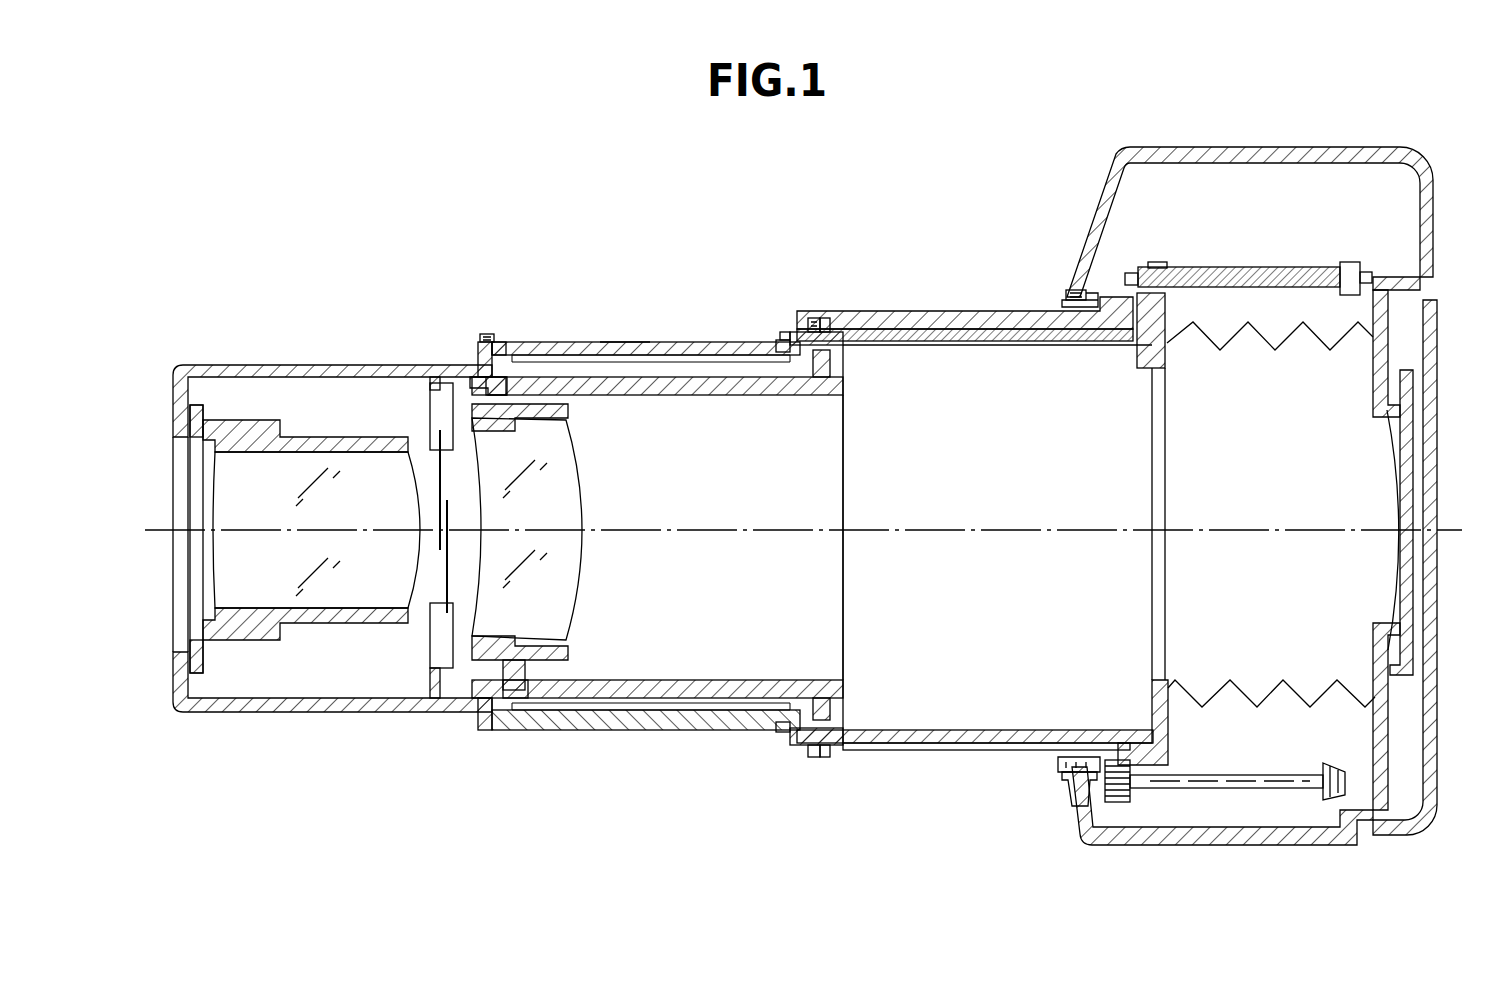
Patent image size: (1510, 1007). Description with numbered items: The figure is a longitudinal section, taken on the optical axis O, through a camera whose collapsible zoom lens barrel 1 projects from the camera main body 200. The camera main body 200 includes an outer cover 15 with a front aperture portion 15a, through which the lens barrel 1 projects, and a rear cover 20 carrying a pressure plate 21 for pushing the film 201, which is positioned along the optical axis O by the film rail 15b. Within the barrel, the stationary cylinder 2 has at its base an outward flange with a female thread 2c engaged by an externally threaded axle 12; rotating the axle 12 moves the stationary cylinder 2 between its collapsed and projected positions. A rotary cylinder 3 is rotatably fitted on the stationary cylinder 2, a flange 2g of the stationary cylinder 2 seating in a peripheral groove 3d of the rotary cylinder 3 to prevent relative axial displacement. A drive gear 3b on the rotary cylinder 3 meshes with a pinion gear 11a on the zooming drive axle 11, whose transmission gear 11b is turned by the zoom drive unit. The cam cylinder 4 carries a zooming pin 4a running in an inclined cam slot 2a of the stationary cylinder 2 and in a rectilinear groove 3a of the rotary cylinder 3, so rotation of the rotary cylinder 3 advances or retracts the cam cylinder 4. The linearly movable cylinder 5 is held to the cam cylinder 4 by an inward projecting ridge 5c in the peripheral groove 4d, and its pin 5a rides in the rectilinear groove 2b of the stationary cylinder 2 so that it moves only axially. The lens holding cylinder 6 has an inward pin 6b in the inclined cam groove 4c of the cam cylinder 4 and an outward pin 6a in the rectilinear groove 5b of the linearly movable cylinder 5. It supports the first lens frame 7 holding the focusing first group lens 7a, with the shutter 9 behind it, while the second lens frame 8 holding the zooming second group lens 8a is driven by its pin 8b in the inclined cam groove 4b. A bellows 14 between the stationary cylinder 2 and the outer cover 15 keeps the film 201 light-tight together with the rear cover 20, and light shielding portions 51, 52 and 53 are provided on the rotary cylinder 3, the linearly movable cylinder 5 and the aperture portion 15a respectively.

The lens barrel 1 is at (664, 782).
The stationary cylinder 2 is at (1140, 340).
The inclined cam slot 2a is at (850, 746).
The rectilinear groove 2b is at (995, 341).
The female thread 2c is at (1157, 262).
The flange 2g is at (825, 320).
The rotary cylinder 3 is at (935, 323).
The rectilinear groove 3a is at (932, 743).
The drive gear 3b is at (1116, 760).
The peripheral groove 3d is at (812, 320).
The cam cylinder 4 is at (757, 686).
The zooming pin 4a is at (835, 705).
The inclined cam groove 4b is at (523, 690).
The inclined cam groove 4c is at (500, 393).
The peripheral groove 4d is at (835, 368).
The linearly movable cylinder 5 is at (676, 343).
The pin for rectilinear guide 5a is at (848, 332).
The rectilinear groove 5b is at (622, 343).
The inward projecting ridge 5c is at (772, 340).
The lens holding cylinder 6 is at (315, 366).
The outwardly projecting pin 6a is at (498, 345).
The inwardly projecting pin 6b is at (477, 380).
The first lens frame 7 is at (258, 420).
The first group lens 7a is at (237, 488).
The second lens frame 8 is at (490, 652).
The second group lens 8a is at (578, 500).
The pin 8b is at (527, 668).
The shutter 9 is at (432, 420).
The zooming drive axle 11 is at (1230, 790).
The pinion gear 11a is at (1076, 806).
The transmission gear 11b is at (1332, 800).
The externally threaded axle 12 is at (1252, 278).
The bellows 14 is at (1238, 343).
The outer cover 15 is at (1300, 147).
The aperture portion 15a is at (1072, 291).
The film rail 15b is at (1374, 412).
The rear cover 20 is at (1438, 378).
The pressure plate 21 is at (1414, 447).
The light shielding portion 51 is at (781, 330).
The light shielding portion 52 is at (467, 353).
The light shielding portion 53 is at (1054, 291).
The camera main body 200 is at (1213, 145).
The film 201 is at (1393, 447).
The optical axis O is at (158, 530).